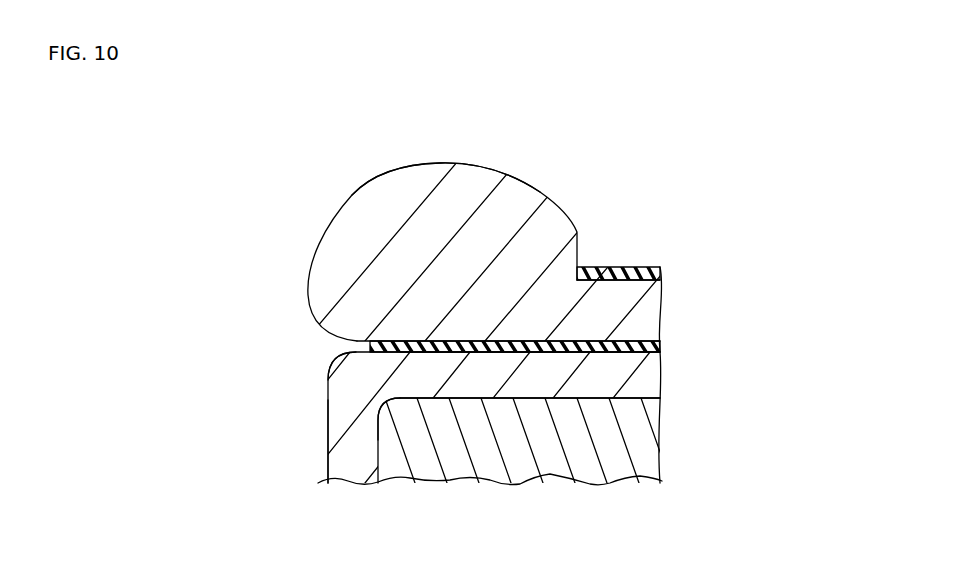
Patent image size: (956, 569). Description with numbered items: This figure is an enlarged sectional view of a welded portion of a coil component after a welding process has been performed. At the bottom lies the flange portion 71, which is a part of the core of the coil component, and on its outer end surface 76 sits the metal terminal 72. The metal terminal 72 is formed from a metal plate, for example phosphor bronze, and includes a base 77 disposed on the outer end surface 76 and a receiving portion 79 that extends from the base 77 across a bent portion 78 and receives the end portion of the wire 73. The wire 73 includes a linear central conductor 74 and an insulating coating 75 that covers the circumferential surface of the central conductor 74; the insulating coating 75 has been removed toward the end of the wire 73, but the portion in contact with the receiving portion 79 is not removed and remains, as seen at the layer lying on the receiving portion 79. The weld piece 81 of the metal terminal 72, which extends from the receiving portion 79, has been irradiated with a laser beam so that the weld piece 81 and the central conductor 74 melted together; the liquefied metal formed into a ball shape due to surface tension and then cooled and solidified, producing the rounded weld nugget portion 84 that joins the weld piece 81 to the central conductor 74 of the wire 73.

The flange portion 71 is at (540, 479).
The metal terminal 72 is at (328, 410).
The wire 73 is at (658, 256).
The central conductor 74 is at (648, 310).
The insulating coating 75 is at (612, 264).
The outer end surface 76 is at (372, 446).
The base 77 is at (347, 433).
The bent portion 78 is at (344, 373).
The receiving portion 79 is at (462, 385).
The weld piece 81 is at (352, 185).
The weld nugget portion 84 is at (388, 165).